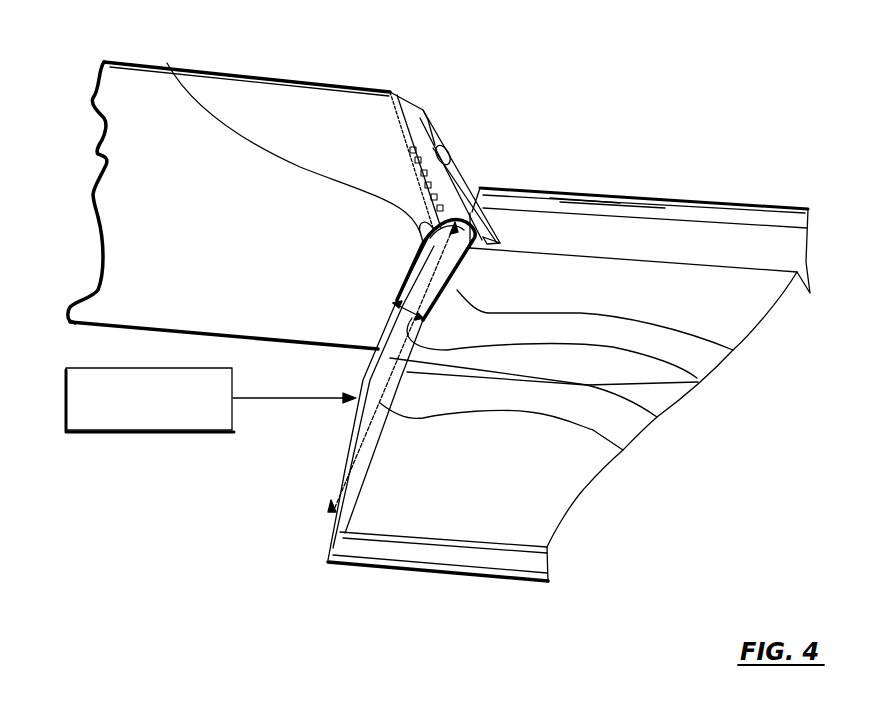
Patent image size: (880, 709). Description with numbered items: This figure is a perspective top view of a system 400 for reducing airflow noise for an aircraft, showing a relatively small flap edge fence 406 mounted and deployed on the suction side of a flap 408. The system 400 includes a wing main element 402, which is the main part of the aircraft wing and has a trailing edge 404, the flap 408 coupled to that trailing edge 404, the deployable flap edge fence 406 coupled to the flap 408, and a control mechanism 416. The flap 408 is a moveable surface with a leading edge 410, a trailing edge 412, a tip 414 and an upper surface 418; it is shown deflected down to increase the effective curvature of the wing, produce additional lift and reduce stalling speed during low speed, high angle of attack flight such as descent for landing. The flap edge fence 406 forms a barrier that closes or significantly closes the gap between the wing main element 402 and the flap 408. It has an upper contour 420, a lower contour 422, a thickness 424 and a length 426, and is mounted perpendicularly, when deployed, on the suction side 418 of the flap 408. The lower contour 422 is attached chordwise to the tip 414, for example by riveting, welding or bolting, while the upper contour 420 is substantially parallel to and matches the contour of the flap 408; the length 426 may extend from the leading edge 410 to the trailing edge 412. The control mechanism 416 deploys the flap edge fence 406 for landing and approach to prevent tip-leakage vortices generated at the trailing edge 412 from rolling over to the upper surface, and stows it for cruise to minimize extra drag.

The system 400 is at (667, 36).
The wing main element 402 is at (390, 130).
The trailing edge 404 is at (525, 193).
The flap edge fence 406 is at (657, 417).
The flap 408 is at (578, 527).
The leading edge 410 is at (570, 253).
The trailing edge 412 is at (440, 570).
The tip 414 is at (340, 563).
The control mechanism 416 is at (80, 368).
The upper surface 418 is at (560, 453).
The lower contour 422 is at (733, 350).
The thickness 424 is at (697, 378).
The upper contour 420 is at (167, 63).
The length 426 is at (623, 450).